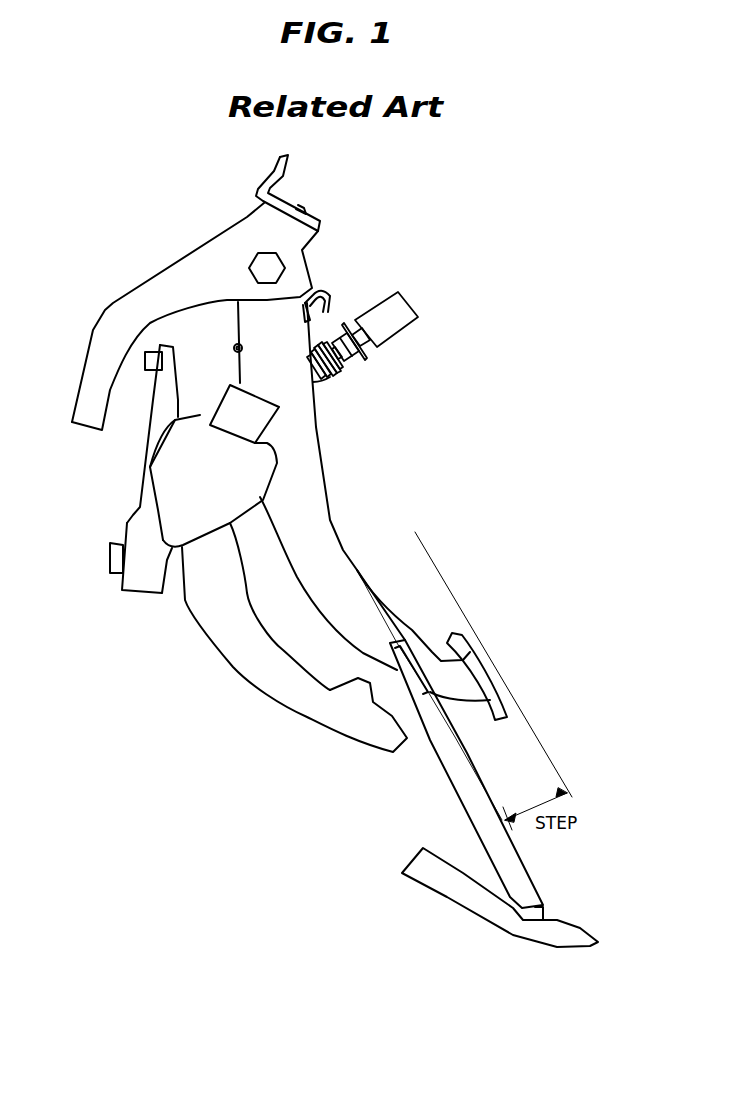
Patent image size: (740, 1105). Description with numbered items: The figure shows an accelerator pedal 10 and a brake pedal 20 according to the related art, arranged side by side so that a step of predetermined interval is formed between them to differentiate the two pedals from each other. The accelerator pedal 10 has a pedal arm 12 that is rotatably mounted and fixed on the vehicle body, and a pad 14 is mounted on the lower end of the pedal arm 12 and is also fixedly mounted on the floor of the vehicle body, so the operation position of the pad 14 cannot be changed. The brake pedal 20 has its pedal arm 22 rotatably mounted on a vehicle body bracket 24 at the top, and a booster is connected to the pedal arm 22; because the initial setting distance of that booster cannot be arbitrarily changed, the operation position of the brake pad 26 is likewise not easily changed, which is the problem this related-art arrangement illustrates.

The accelerator pedal 10 is at (255, 693).
The pedal arm 12 is at (218, 628).
The pad 14 is at (470, 798).
The brake pedal 20 is at (360, 517).
The pedal arm 22 is at (307, 433).
The vehicle body bracket 24 is at (290, 258).
The pad 26 is at (480, 667).